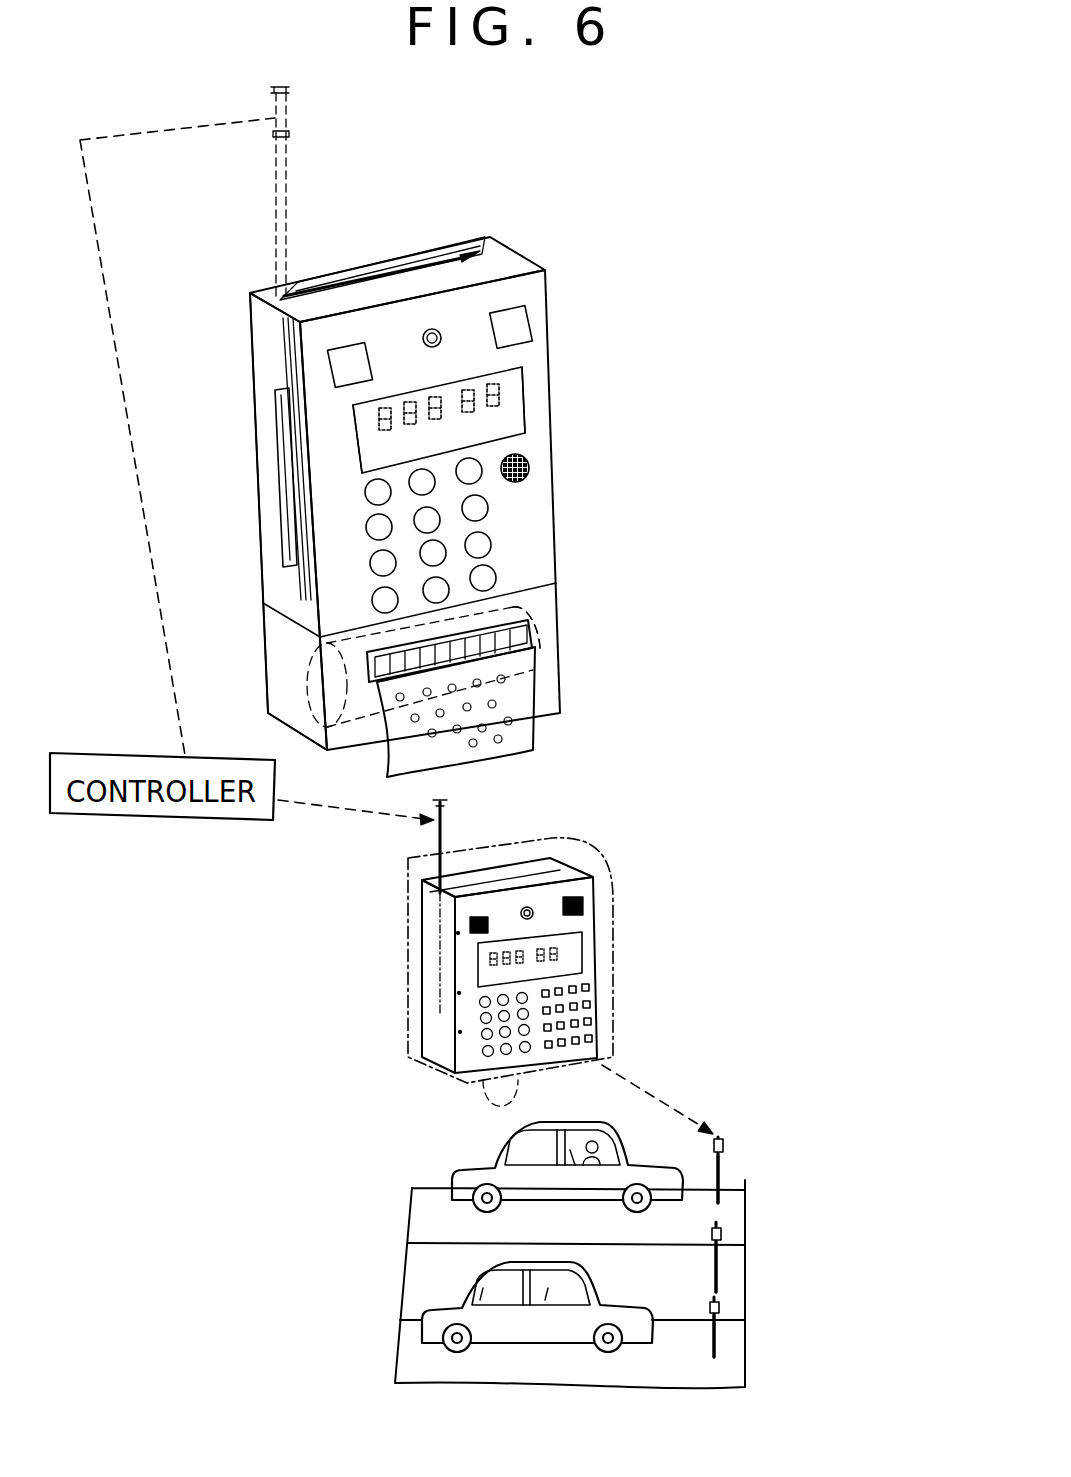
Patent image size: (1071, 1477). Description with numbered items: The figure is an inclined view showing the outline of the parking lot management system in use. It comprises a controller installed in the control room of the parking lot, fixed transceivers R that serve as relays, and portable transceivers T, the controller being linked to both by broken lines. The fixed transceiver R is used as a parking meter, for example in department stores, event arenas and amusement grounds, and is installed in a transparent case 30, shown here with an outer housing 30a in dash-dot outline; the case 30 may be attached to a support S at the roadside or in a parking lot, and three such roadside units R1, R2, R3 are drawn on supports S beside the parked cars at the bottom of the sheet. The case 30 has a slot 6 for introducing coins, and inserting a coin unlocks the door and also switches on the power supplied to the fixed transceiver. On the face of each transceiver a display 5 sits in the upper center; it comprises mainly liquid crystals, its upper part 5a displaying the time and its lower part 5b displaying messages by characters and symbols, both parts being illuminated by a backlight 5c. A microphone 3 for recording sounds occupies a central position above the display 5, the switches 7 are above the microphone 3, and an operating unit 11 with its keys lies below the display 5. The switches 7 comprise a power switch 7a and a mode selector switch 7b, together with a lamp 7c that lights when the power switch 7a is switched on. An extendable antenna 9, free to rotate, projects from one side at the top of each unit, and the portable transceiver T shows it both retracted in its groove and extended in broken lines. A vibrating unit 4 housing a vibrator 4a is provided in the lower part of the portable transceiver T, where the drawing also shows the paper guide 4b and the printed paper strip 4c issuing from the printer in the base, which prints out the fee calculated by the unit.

The portable transceiver T is at (320, 230).
The fixed transceiver R is at (612, 866).
The extendable antenna 9 is at (276, 170).
The switches 7 is at (442, 319).
The power switch 7a is at (331, 370).
The mode selector switch 7b is at (441, 346).
The lamp 7c is at (529, 322).
The display 5 is at (520, 400).
The upper part of display 5a is at (497, 396).
The lower part of display 5b is at (512, 424).
The backlight 5c is at (358, 447).
The microphone 3 is at (530, 472).
The operating unit 11 is at (490, 507).
The slot 6 is at (278, 425).
The transparent case 30 is at (266, 482).
The outer housing 30a is at (616, 1000).
The vibrating unit 4 is at (545, 646).
The vibrator 4a is at (307, 678).
The paper feed 4b is at (533, 628).
The printed paper 4c is at (537, 672).
The roadside receiver R1 is at (721, 1136).
The roadside receiver R2 is at (722, 1232).
The roadside receiver R3 is at (720, 1307).
The support S is at (723, 1165).